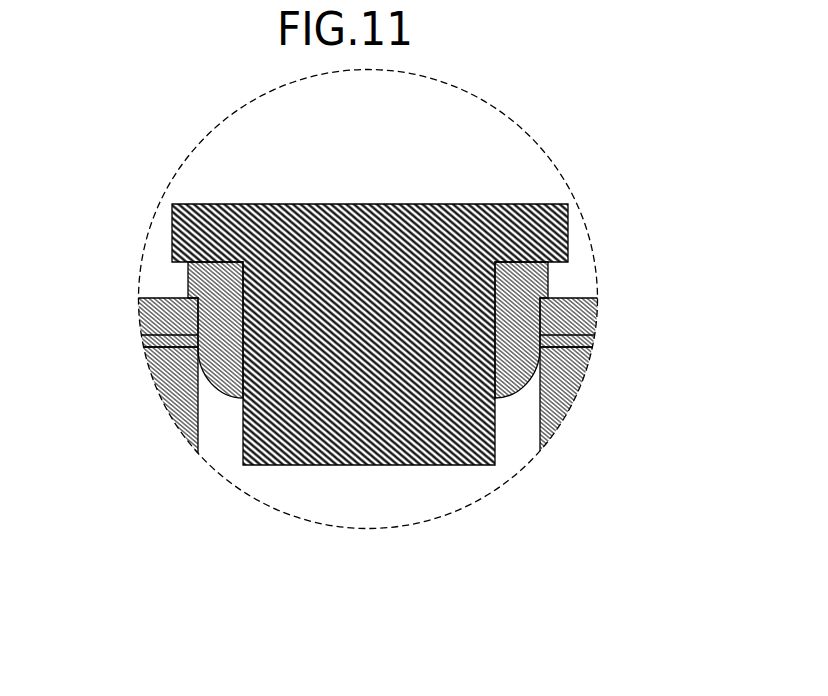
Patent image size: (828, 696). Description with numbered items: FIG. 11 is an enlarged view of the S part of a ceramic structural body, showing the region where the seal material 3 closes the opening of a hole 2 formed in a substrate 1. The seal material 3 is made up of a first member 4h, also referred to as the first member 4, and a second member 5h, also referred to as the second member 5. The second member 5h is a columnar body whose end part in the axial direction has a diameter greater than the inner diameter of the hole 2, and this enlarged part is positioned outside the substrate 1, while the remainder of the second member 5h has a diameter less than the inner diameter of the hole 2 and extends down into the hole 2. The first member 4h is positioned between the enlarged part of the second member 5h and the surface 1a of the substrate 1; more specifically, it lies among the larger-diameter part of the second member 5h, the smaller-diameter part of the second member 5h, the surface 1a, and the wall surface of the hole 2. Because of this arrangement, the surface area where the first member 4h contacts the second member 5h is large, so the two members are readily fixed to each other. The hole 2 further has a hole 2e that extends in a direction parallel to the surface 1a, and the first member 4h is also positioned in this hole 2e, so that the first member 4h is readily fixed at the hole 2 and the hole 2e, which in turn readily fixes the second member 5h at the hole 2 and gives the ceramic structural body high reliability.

The S part S is at (485, 102).
The seal material 3 is at (430, 175).
The first member 4 is at (368, 277).
The first member 4h is at (222, 285).
The second member 5 is at (370, 311).
The second member 5h is at (390, 250).
The substrate 1 is at (180, 378).
The surface of a substrate 1a is at (560, 298).
The hole 2 is at (340, 512).
The hole 2e is at (163, 335).